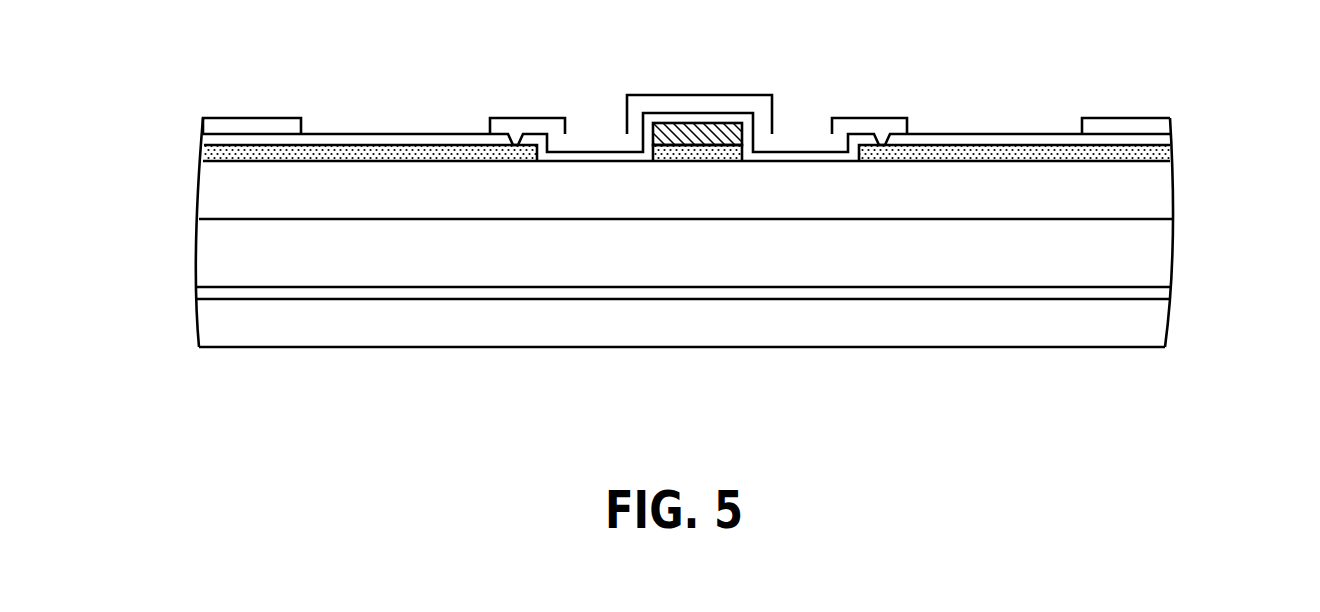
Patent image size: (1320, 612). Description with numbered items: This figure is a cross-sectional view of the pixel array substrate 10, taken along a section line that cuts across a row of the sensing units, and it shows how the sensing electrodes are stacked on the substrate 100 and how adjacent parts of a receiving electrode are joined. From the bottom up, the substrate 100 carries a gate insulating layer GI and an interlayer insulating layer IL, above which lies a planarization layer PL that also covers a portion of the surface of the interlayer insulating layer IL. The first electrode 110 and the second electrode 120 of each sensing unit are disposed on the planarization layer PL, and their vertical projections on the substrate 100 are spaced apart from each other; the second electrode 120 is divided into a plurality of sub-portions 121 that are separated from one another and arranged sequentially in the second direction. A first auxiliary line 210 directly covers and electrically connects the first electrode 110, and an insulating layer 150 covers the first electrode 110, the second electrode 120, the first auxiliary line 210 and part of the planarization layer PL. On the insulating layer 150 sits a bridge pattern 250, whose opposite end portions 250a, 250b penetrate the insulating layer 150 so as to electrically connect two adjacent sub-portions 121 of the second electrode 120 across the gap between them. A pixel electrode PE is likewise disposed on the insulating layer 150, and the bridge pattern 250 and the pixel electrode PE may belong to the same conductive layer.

The pixel array substrate 10 is at (684, 236).
The substrate 100 is at (1157, 323).
The gate insulating layer GI is at (1155, 293).
The interlayer insulating layer IL is at (1153, 255).
The planarization layer PL is at (1162, 195).
The sub-portion 121 is at (217, 153).
The second electrode 120 is at (684, 161).
The first electrode 110 is at (720, 148).
The first auxiliary line 210 is at (697, 127).
The insulating layer 150 is at (1160, 142).
The end portion 250a is at (515, 125).
The bridge pattern 250 is at (652, 105).
The end portion 250b is at (884, 125).
The pixel electrode PE is at (255, 127).